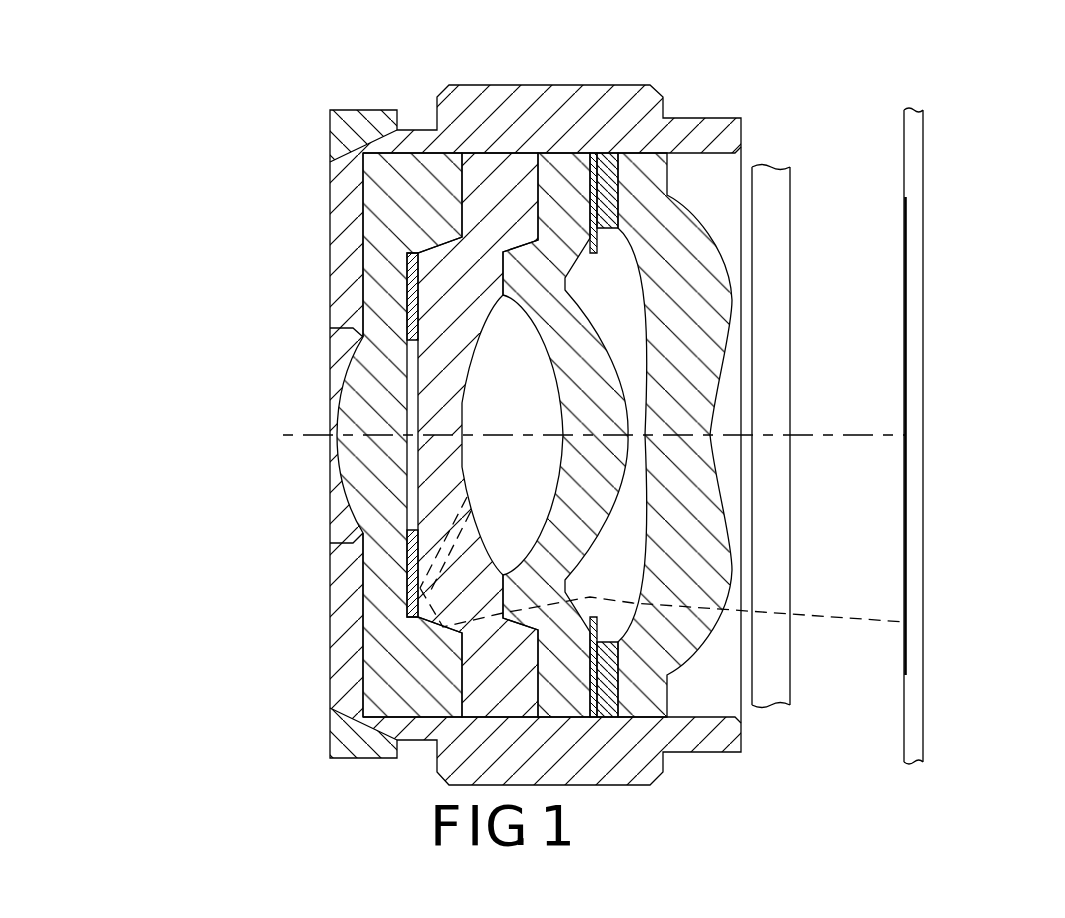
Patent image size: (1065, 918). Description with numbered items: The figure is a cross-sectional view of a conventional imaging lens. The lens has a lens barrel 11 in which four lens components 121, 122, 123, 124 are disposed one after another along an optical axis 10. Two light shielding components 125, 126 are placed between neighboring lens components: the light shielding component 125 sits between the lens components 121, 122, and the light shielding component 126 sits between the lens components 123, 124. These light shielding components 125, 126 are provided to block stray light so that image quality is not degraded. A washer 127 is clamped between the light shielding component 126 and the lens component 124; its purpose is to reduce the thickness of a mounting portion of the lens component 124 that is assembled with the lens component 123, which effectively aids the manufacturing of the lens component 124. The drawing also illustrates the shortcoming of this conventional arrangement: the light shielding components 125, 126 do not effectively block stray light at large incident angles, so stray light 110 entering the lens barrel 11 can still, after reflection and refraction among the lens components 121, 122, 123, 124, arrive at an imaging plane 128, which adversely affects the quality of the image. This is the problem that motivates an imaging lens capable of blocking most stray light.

The optical axis 10 is at (270, 435).
The lens barrel 11 is at (466, 85).
The stray light 110 is at (467, 497).
The lens component 121 is at (420, 168).
The lens component 122 is at (513, 167).
The lens component 123 is at (572, 167).
The lens component 124 is at (642, 167).
The light shielding component 125 is at (417, 268).
The light shielding component 126 is at (593, 213).
The washer 127 is at (617, 685).
The imaging plane 128 is at (907, 519).